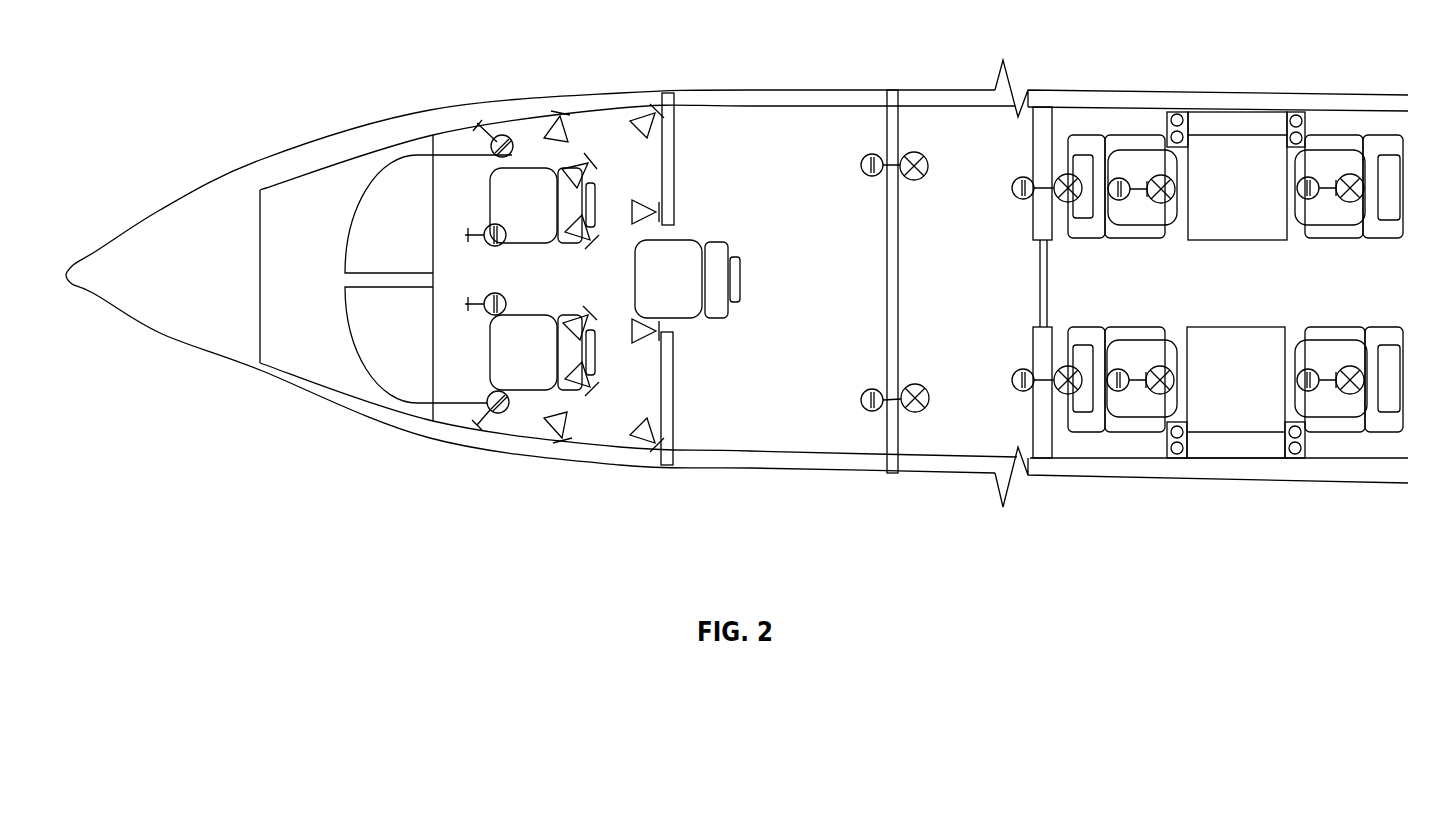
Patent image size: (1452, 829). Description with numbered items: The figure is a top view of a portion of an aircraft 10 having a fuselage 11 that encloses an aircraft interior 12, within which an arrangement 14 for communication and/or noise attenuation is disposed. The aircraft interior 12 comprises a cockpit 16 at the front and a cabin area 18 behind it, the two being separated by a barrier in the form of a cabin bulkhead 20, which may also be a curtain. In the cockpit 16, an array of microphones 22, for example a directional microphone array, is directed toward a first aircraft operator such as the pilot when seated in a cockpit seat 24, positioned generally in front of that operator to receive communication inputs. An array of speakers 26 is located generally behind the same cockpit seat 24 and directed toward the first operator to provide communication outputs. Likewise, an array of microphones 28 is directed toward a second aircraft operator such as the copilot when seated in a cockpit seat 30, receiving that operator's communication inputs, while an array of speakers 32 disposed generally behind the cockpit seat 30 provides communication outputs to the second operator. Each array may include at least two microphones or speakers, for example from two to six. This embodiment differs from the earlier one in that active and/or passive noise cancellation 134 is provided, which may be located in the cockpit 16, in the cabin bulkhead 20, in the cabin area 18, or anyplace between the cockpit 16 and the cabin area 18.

The aircraft 10 is at (757, 90).
The fuselage 11 is at (827, 90).
The aircraft interior 12 is at (783, 433).
The arrangement 14 is at (607, 146).
The cockpit 16 is at (486, 268).
The cabin area 18 is at (1385, 258).
The cabin bulkhead 20 is at (900, 440).
The array of microphones 22 is at (465, 304).
The cockpit seat 24 is at (540, 315).
The array of speakers 26 is at (652, 440).
The array of microphones 28 is at (477, 123).
The cockpit seat 30 is at (520, 243).
The array of speakers 32 is at (648, 140).
The active and/or passive noise cancellation 134 is at (864, 158).